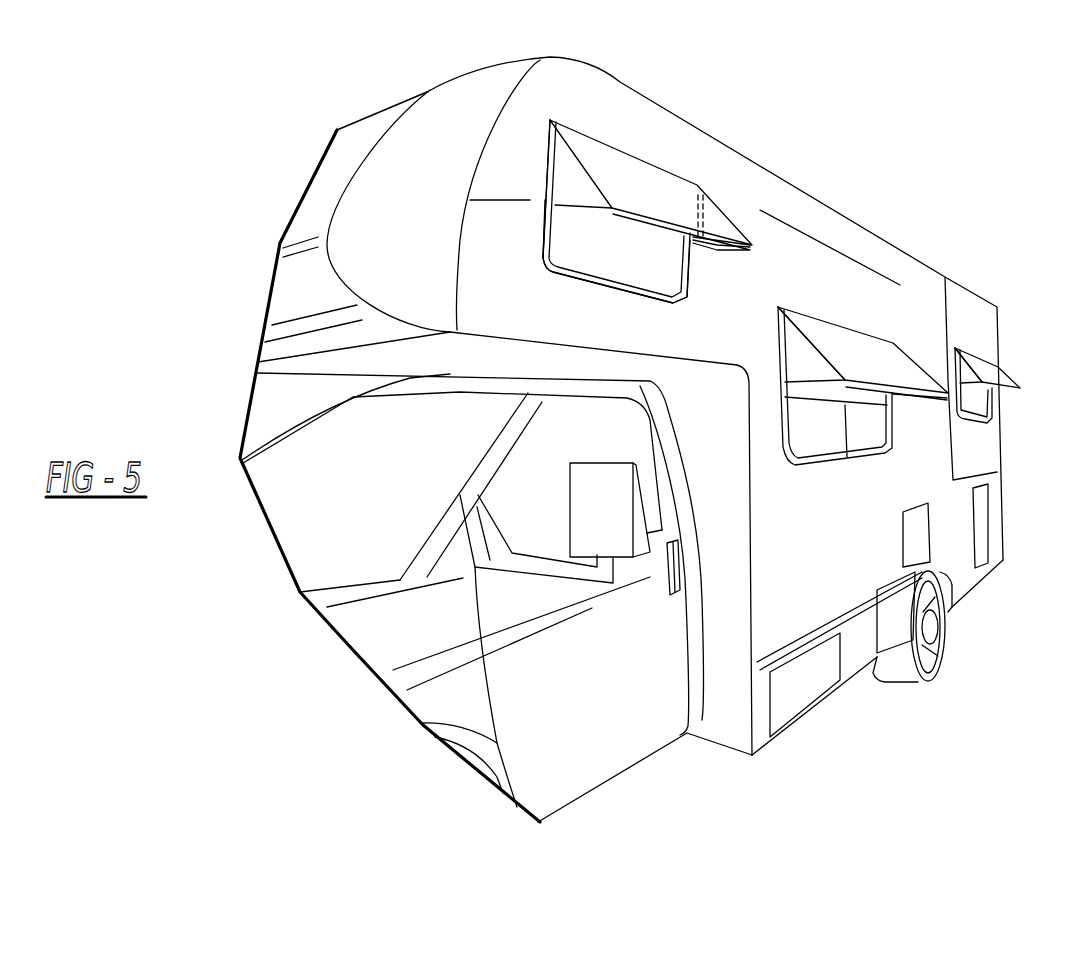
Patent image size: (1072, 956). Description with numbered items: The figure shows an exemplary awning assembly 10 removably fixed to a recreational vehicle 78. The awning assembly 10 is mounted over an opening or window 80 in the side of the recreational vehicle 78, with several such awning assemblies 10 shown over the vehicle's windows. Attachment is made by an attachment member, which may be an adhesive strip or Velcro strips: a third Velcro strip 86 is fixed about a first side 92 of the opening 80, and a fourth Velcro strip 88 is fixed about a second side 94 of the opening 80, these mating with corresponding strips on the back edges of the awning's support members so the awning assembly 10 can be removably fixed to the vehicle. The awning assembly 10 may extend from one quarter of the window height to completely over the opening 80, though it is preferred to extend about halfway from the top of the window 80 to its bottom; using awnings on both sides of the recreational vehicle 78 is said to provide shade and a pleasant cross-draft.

The awning assembly 10 is at (654, 184).
The recreational vehicle 78 is at (784, 226).
The opening or window 80 is at (647, 257).
The third Velcro strip 86 is at (547, 167).
The fourth Velcro strip 88 is at (703, 212).
The first side of the opening 92 is at (518, 217).
The second side of the opening 94 is at (736, 260).